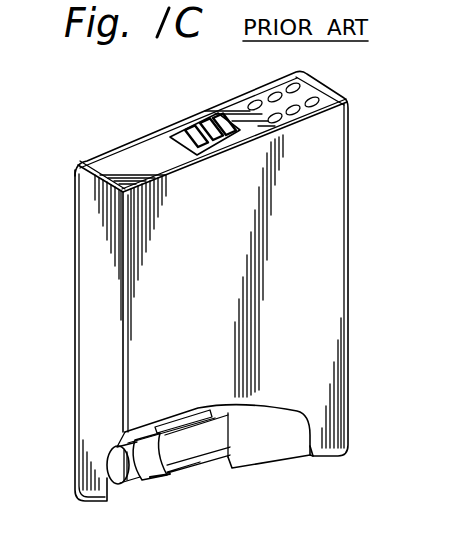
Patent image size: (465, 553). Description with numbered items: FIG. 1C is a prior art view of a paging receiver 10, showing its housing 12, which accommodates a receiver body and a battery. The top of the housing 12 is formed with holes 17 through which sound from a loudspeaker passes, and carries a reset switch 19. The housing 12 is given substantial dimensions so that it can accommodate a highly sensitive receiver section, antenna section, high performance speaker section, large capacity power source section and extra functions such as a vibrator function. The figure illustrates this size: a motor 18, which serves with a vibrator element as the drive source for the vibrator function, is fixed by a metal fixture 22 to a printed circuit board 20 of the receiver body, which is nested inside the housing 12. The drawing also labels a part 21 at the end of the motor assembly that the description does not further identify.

The paging receiver 10 is at (377, 117).
The housing 12 is at (352, 162).
The holes 17 is at (272, 94).
The motor 18 is at (153, 476).
The reset switch 19 is at (189, 136).
The printed circuit board 20 is at (288, 456).
The cylindrical connector end 21 is at (112, 468).
The metal fixture 22 is at (201, 463).